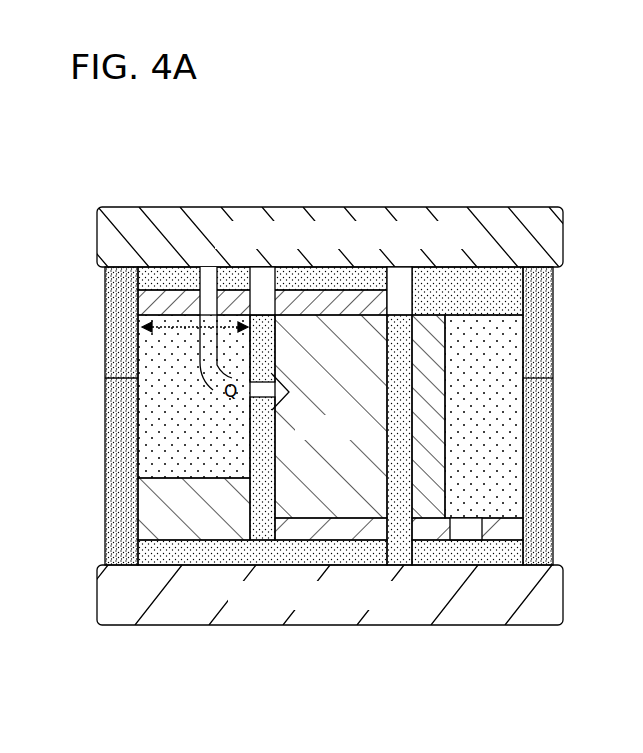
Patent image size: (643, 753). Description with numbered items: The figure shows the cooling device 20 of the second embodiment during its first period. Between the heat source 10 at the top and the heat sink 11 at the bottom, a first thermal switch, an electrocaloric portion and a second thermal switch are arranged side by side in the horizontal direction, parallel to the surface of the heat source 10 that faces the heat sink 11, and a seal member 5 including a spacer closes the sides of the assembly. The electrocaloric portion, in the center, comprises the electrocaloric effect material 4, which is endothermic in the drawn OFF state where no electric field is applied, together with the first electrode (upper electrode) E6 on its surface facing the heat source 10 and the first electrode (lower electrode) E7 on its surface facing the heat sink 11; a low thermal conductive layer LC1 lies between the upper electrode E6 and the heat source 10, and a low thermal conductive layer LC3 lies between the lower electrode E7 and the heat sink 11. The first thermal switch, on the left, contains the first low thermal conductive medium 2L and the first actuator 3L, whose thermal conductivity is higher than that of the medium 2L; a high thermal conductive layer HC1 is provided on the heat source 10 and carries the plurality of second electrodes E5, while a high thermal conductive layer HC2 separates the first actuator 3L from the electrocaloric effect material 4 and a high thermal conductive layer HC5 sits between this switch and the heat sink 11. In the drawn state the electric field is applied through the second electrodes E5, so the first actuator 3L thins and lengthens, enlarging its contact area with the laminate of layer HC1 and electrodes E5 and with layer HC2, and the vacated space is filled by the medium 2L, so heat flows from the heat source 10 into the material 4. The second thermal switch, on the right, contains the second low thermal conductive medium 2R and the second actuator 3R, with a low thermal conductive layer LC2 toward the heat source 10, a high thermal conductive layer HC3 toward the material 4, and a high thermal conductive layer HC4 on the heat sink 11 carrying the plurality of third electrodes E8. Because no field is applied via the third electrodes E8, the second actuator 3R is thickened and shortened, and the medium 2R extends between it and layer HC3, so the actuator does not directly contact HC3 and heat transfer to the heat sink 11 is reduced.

The cooling device 20 is at (515, 120).
The heat source 10 is at (115, 238).
The heat sink 11 is at (550, 600).
The seal member 5 is at (120, 412).
The electrocaloric effect material 4 is at (345, 475).
The first actuator 3L is at (165, 385).
The second actuator 3R is at (483, 450).
The first low thermal conductive medium 2L is at (165, 508).
The second low thermal conductive medium 2R is at (440, 330).
The high thermal conductive layer HC1 is at (150, 278).
The high thermal conductive layer HC2 is at (262, 437).
The high thermal conductive layer HC3 is at (398, 370).
The high thermal conductive layer HC4 is at (500, 556).
The high thermal conductive layer HC5 is at (165, 553).
The low thermal conductive layer LC1 is at (378, 282).
The low thermal conductive layer LC2 is at (470, 290).
The low thermal conductive layer LC3 is at (218, 550).
The second electrodes E5 is at (160, 300).
The first electrode (upper electrode) E6 is at (405, 281).
The first electrode (lower electrode) E7 is at (287, 527).
The third electrodes E8 is at (450, 525).